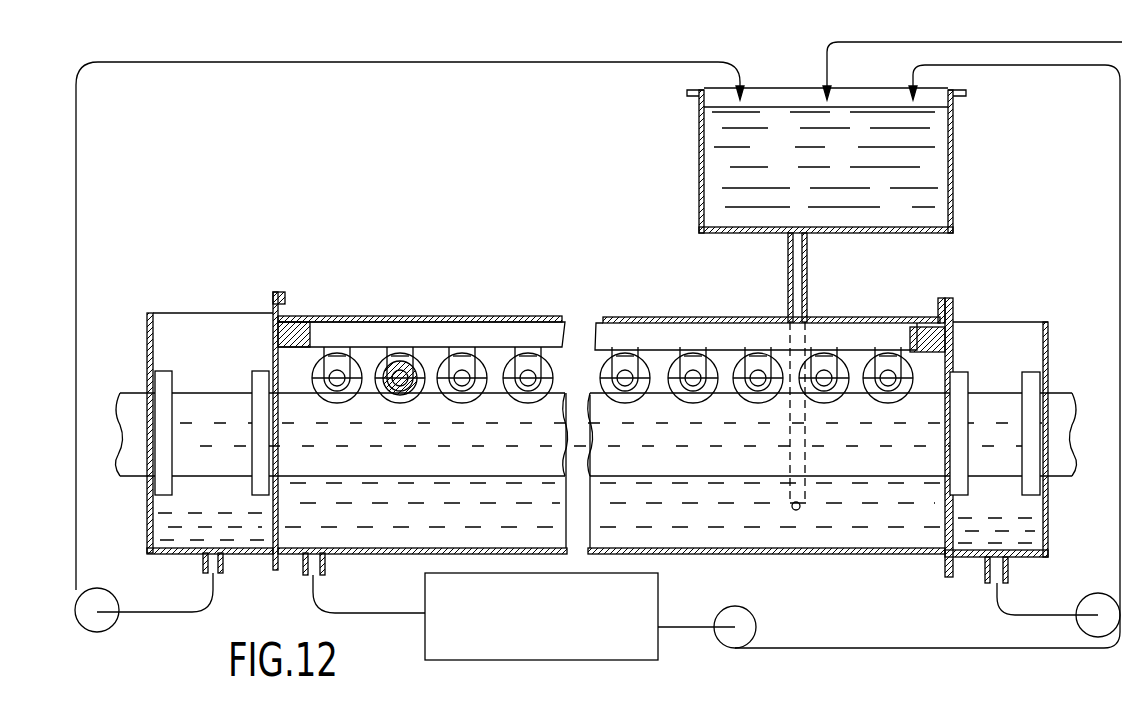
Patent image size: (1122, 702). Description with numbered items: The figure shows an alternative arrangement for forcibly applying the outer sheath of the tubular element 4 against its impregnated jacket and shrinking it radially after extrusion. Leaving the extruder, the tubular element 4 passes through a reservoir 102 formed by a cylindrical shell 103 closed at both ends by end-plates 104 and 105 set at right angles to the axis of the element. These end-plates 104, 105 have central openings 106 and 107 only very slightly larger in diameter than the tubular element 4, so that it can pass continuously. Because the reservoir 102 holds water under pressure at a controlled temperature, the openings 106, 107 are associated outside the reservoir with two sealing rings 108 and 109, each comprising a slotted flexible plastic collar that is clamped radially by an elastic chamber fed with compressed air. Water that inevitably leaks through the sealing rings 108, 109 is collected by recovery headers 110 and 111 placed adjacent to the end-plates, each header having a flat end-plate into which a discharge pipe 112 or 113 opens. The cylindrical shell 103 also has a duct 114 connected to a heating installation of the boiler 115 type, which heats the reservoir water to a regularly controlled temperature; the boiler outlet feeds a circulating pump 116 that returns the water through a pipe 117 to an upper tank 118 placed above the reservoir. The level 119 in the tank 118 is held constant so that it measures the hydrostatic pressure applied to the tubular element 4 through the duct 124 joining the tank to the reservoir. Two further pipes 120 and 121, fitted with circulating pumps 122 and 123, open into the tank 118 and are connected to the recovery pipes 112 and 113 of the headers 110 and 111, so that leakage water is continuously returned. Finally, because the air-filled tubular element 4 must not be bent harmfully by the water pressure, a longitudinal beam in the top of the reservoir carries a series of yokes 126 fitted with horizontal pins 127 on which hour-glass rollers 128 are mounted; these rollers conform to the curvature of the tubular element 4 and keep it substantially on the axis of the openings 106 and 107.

The tubular element 4 is at (220, 382).
The reservoir 102 is at (410, 310).
The cylindrical shell 103 is at (472, 322).
The end-plate 104 is at (283, 284).
The end-plate 105 is at (940, 288).
The central opening 106 is at (283, 386).
The central opening 107 is at (952, 387).
The sealing ring 108 is at (257, 370).
The sealing ring 109 is at (968, 387).
The recovery header 110 is at (155, 357).
The recovery header 111 is at (1030, 508).
The pipe 112 is at (203, 568).
The pipe 113 is at (985, 572).
The duct 114 is at (325, 568).
The boiler 115 is at (560, 616).
The circulating pump 116 is at (752, 620).
The pipe 117 is at (825, 62).
The upper tank 118 is at (699, 173).
The level 119 is at (700, 98).
The pipe 120 is at (226, 64).
The pipe 121 is at (1050, 70).
The circulating pump 122 is at (97, 602).
The circulating pump 123 is at (1092, 603).
The duct 124 is at (788, 258).
The yoke 126 is at (533, 358).
The horizontal pin 127 is at (625, 377).
The hour-glass roller 128 is at (693, 377).